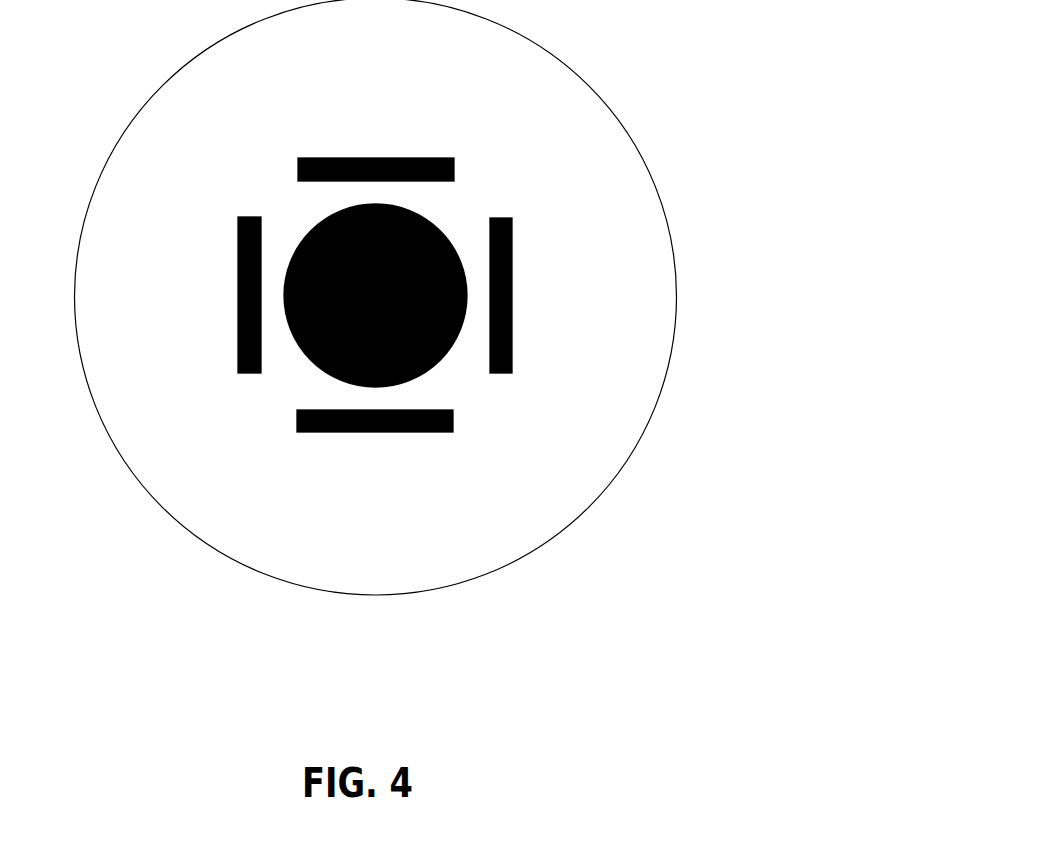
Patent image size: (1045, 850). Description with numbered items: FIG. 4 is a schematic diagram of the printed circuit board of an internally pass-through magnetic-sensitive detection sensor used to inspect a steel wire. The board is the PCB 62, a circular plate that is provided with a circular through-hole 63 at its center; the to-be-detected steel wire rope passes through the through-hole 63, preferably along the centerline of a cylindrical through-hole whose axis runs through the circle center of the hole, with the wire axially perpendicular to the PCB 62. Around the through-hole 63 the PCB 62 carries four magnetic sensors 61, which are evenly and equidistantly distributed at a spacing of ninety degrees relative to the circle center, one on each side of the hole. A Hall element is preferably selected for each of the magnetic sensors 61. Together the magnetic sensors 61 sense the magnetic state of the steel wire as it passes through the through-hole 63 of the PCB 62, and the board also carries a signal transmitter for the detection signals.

The magnetic sensors TR1 to TR4 61 is at (298, 167).
The PCB 62 is at (461, 297).
The through-hole of the PCB 63 is at (519, 399).